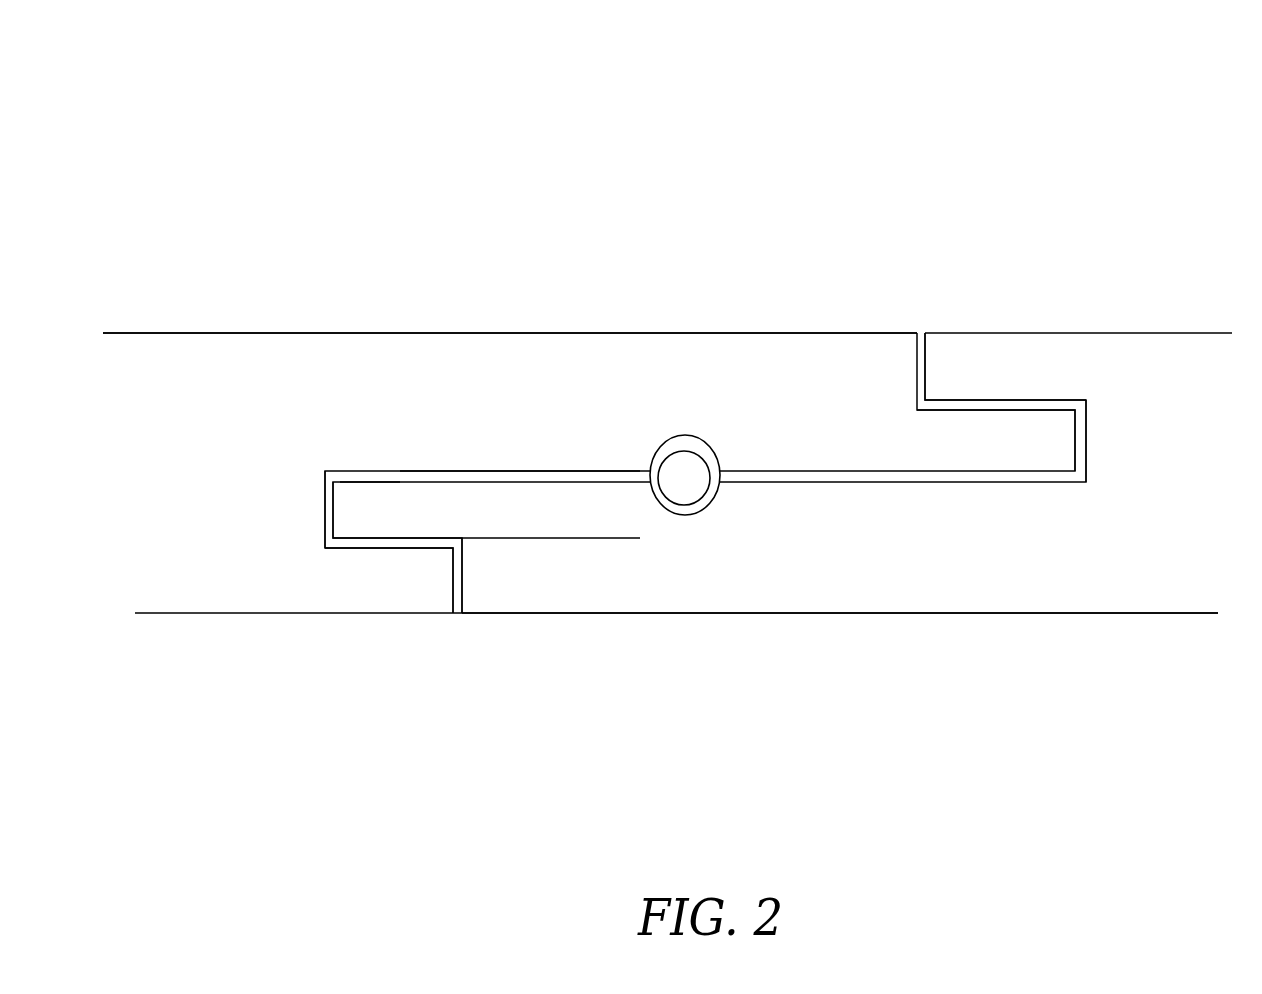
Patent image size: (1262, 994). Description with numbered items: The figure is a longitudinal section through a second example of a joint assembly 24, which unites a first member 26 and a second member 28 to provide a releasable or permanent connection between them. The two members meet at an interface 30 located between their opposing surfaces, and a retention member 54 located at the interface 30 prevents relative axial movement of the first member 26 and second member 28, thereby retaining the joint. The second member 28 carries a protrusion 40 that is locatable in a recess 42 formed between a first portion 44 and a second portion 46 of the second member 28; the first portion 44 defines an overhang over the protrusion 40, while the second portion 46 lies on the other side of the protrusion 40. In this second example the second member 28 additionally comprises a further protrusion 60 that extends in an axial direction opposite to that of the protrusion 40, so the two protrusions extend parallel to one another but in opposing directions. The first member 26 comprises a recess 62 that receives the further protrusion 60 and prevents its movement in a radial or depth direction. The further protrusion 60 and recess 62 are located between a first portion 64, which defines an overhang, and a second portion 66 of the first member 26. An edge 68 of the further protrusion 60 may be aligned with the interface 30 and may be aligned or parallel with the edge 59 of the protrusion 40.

The joint assembly 24 is at (272, 178).
The first member 26 is at (148, 476).
The second member 28 is at (1154, 541).
The interface 30 is at (853, 483).
The protrusion 40 is at (1003, 458).
The recess 42 is at (1087, 441).
The first portion 44 is at (1004, 385).
The second portion 46 is at (576, 571).
The retention member 54 is at (685, 462).
The edge 59 is at (978, 472).
The further protrusion 60 is at (413, 523).
The recess 62 is at (325, 507).
The first portion 64 is at (413, 590).
The second portion 66 is at (524, 420).
The edge 68 is at (367, 481).